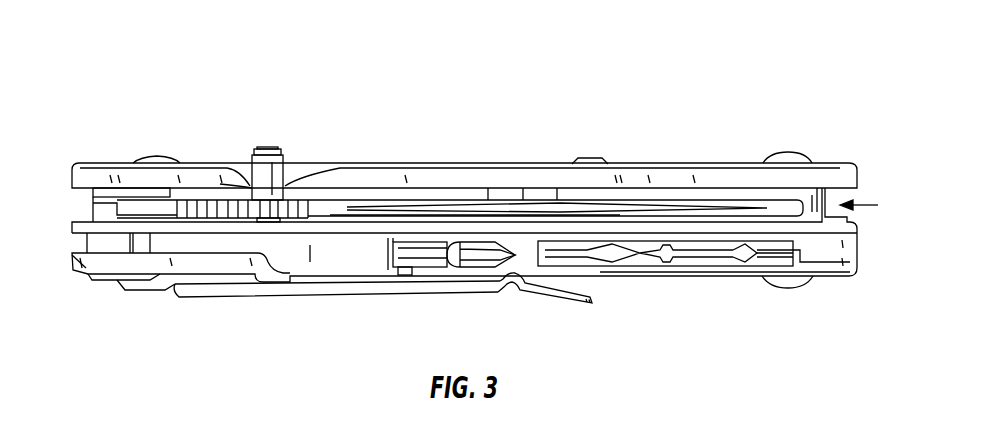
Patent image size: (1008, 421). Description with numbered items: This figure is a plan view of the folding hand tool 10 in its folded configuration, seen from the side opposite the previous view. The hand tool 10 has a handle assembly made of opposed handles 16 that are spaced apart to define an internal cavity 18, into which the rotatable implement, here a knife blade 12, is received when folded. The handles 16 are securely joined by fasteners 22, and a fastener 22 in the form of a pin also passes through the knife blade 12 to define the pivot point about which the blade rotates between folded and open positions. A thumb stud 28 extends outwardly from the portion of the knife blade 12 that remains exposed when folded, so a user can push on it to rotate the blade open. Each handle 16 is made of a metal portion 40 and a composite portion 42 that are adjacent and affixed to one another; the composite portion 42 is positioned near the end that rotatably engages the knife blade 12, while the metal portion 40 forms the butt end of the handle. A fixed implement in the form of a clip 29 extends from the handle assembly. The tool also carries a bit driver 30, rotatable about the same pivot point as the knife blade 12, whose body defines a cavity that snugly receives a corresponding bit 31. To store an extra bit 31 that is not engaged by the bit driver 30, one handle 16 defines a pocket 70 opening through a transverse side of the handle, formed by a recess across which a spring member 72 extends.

The hand tool 10 is at (695, 160).
The knife blade 12 is at (618, 210).
The handles 16 is at (440, 163).
The internal cavity 18 is at (871, 207).
The fastener 22 is at (157, 157).
The thumb stud 28 is at (268, 147).
The clip 29 is at (215, 300).
The bit driver 30 is at (333, 280).
The bit 31 is at (455, 252).
The metal portion 40 is at (853, 180).
The composite portion 42 is at (62, 170).
The pocket 70 is at (565, 248).
The spring member 72 is at (672, 270).